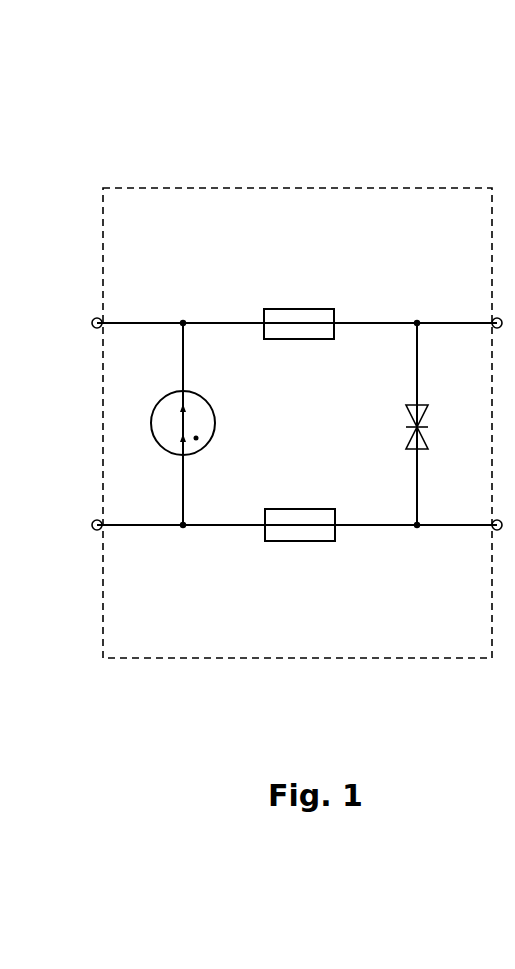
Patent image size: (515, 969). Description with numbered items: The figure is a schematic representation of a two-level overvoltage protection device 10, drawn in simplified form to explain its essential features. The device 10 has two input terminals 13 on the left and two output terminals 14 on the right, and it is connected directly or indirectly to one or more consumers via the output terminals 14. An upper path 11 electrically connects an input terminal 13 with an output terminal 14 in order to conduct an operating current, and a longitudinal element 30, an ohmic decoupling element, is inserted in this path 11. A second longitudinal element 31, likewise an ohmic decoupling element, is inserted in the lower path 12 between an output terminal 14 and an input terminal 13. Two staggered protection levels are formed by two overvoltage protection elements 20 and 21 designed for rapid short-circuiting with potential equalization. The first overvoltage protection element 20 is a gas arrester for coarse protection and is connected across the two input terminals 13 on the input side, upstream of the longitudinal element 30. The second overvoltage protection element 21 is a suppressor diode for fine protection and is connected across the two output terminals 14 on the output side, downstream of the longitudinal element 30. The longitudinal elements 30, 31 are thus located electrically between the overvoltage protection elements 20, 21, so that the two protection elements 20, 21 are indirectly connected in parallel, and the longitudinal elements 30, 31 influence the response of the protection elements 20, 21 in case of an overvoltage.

The two-level overvoltage protection device 10 is at (358, 171).
The path 11 is at (386, 322).
The path 12 is at (230, 524).
The input terminals 13 is at (94, 332).
The output terminals 14 is at (497, 332).
The overvoltage protection element 20 is at (168, 421).
The overvoltage protection element 21 is at (405, 427).
The longitudinal element 30 is at (288, 326).
The longitudinal element 31 is at (301, 532).